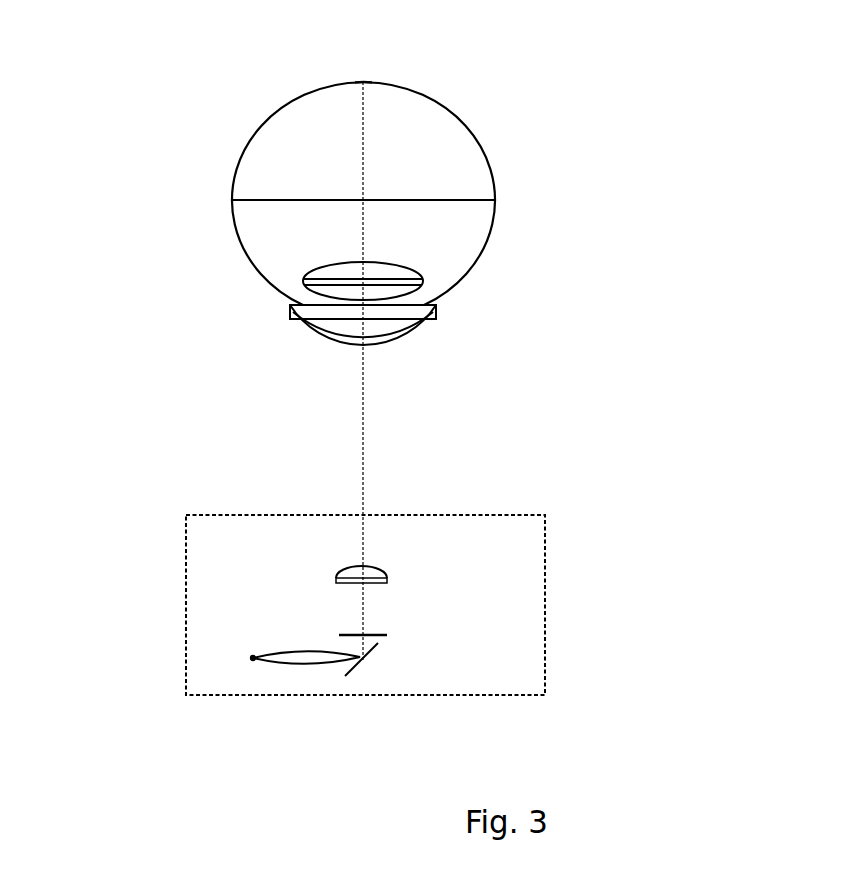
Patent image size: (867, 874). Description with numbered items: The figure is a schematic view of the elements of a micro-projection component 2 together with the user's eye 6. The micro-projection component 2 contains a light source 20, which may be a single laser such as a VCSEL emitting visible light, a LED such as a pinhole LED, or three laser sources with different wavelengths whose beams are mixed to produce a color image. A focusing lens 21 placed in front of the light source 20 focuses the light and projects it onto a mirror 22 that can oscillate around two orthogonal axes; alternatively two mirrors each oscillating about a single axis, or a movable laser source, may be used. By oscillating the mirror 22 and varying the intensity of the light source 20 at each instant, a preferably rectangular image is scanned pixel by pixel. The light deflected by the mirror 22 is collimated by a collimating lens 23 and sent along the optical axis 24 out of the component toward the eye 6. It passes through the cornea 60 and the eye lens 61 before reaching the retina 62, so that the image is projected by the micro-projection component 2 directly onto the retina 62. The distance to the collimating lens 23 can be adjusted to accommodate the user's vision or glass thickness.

The micro-projection component 2 is at (545, 555).
The light source 20 is at (253, 658).
The focusing lens 21 is at (302, 662).
The mirror 22 is at (361, 661).
The collimating lens 23 is at (390, 572).
The optical axis 24 is at (365, 479).
The user's eye 6 is at (150, 257).
The cornea 60 is at (305, 328).
The eye lens 61 is at (415, 273).
The retina 62 is at (371, 82).